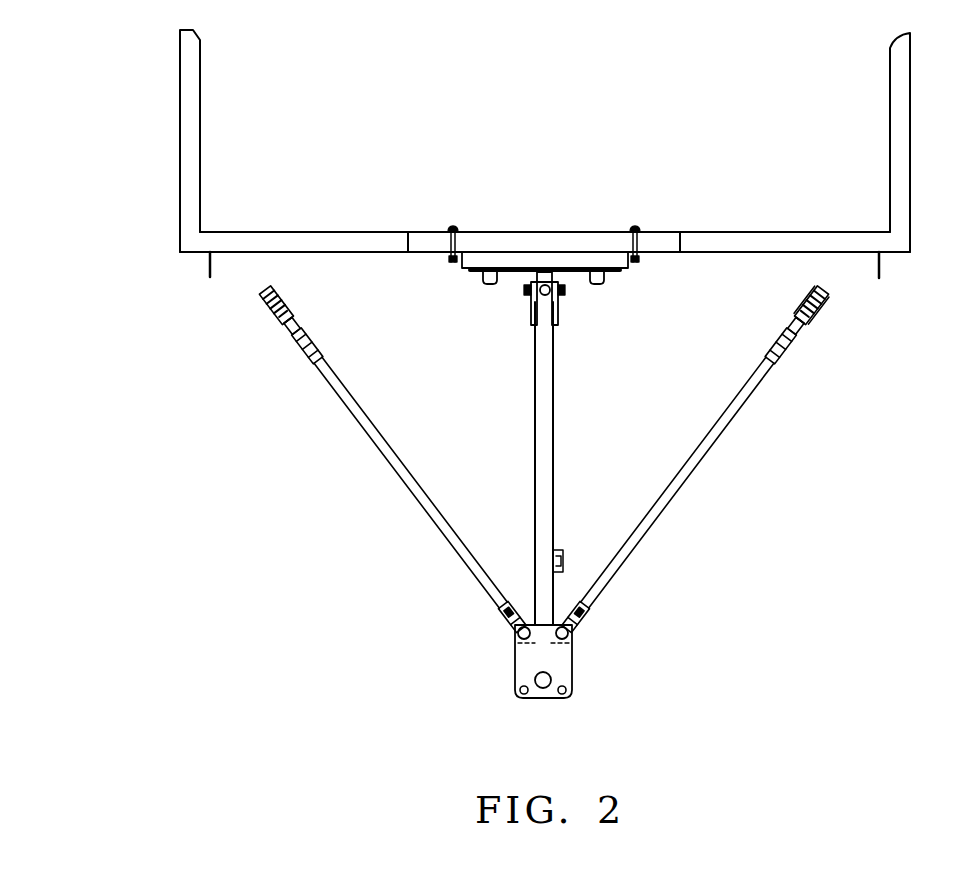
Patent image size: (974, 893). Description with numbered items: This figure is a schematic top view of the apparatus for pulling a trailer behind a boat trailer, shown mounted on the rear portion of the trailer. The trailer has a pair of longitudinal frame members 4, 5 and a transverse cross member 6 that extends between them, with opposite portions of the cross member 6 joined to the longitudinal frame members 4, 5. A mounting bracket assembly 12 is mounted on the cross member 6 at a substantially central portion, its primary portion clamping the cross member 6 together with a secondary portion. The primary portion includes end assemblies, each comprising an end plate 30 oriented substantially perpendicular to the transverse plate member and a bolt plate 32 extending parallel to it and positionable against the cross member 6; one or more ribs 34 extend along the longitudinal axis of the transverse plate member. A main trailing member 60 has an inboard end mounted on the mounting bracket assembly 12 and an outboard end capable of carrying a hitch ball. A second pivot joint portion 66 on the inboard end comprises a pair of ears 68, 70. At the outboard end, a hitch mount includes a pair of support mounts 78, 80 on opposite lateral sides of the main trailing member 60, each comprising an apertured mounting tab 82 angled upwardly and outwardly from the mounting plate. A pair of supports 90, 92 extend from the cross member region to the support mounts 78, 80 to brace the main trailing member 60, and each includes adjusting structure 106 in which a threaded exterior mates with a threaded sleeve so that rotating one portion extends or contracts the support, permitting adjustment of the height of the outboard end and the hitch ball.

The longitudinal frame member 4 is at (190, 180).
The longitudinal frame member 5 is at (902, 188).
The transverse cross member 6 is at (270, 240).
The mounting bracket assembly 12 is at (590, 239).
The end plate 30 is at (457, 267).
The bolt plate 32 is at (452, 262).
The rib 34 is at (510, 258).
The main trailing member 60 is at (536, 470).
The second pivot joint portion 66 is at (572, 332).
The ear 68 is at (534, 310).
The ear 70 is at (560, 302).
The support mount 78 is at (516, 640).
The support mount 80 is at (571, 640).
The mounting tab 82 is at (525, 620).
The support 90 is at (392, 462).
The support 92 is at (696, 462).
The adjusting structure 106 is at (800, 345).